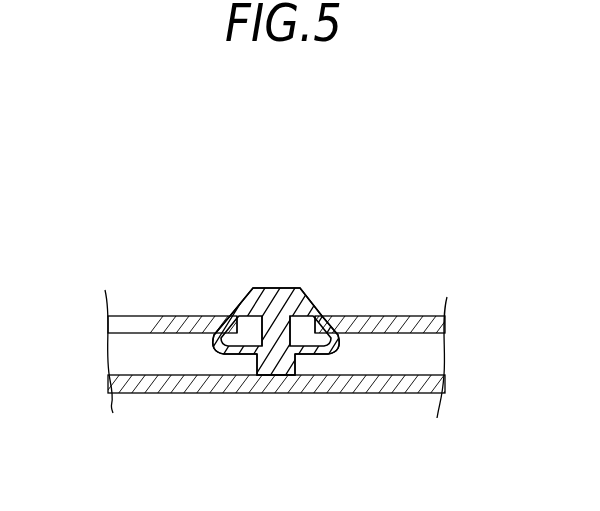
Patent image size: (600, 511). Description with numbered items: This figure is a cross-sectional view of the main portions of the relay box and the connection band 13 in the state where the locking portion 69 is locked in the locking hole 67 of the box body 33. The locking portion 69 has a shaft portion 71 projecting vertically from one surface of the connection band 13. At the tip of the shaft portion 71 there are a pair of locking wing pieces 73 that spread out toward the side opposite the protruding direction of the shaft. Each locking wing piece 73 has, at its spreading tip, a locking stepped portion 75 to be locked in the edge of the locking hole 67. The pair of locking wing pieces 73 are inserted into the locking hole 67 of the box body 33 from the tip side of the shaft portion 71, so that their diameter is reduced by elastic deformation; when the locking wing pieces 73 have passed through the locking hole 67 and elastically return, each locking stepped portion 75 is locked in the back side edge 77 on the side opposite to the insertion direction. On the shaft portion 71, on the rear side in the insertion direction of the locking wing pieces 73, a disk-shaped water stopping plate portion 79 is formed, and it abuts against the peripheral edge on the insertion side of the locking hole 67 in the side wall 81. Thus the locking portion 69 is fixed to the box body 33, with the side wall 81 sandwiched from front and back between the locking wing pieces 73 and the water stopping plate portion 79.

The connection band 13 is at (169, 400).
The box body 33 is at (430, 308).
The locking hole 67 is at (302, 352).
The locking portion 69 is at (296, 261).
The shaft portion 71 is at (250, 364).
The locking wing piece 73 is at (231, 308).
The locking stepped portion 75 is at (214, 338).
The back side edge 77 is at (228, 316).
The water stopping plate portion 79 is at (331, 340).
The side wall 81 is at (194, 334).